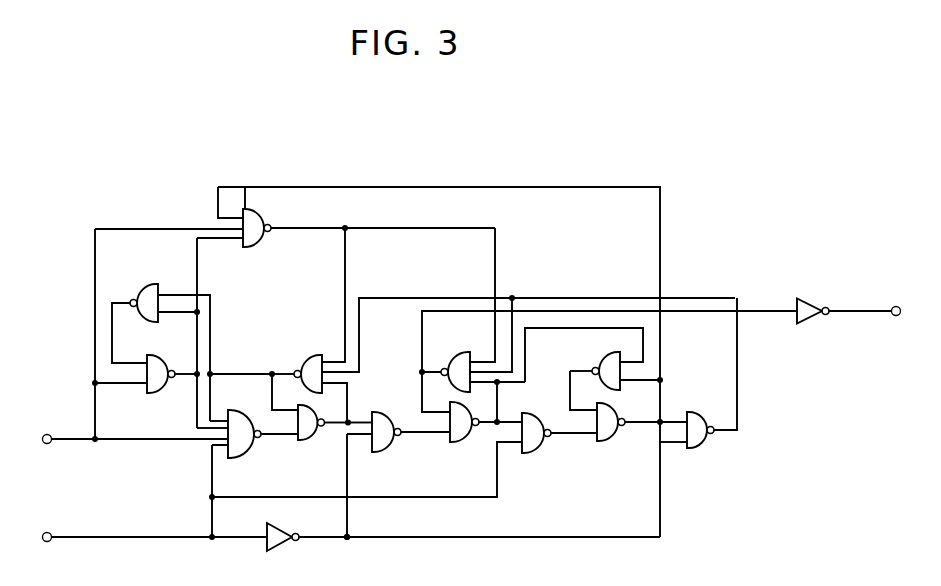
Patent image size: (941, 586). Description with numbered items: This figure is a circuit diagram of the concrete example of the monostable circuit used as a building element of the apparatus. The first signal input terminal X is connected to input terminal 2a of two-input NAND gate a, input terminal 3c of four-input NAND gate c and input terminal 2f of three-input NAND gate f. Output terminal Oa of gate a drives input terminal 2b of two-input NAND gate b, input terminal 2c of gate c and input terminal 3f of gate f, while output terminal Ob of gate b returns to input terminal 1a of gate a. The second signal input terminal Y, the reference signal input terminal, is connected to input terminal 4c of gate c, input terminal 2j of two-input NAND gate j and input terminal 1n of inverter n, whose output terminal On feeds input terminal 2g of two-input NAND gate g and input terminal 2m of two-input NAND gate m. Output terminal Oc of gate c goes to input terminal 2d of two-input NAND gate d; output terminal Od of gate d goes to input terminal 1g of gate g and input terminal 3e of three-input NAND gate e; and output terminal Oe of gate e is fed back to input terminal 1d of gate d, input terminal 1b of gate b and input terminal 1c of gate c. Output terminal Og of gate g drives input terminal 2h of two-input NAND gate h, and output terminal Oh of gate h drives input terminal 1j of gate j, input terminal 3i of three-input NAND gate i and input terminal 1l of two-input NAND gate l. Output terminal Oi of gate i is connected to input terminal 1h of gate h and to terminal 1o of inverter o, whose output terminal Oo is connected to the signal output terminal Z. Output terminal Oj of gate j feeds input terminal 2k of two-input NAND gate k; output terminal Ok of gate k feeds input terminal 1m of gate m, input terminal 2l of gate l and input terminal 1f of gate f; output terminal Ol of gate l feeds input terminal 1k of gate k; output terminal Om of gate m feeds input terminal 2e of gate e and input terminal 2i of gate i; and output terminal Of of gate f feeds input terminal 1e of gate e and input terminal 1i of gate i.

The first signal input terminal X is at (48, 434).
The second signal input terminal Y is at (50, 532).
The signal output terminal Z is at (900, 303).
The 2-input NAND gate a is at (157, 391).
The input terminal 1a is at (114, 358).
The input terminal 2a is at (130, 385).
The output terminal Oa is at (176, 378).
The 2-input NAND gate b is at (151, 284).
The input terminal 1b is at (171, 293).
The input terminal 2b is at (165, 317).
The output terminal Ob is at (128, 298).
The 4-input NAND gate c is at (242, 456).
The input terminal 1c is at (214, 418).
The input terminal 2c is at (221, 435).
The input terminal 3c is at (224, 455).
The input terminal 4c is at (216, 462).
The output terminal Oc is at (260, 437).
The 2-input NAND gate d is at (304, 440).
The input terminal 1d is at (285, 410).
The input terminal 2d is at (290, 436).
The output terminal Od is at (324, 429).
The 3-input NAND gate e is at (309, 357).
The input terminal 1e is at (336, 355).
The input terminal 2e is at (338, 384).
The input terminal 3e is at (349, 396).
The output terminal Oe is at (289, 370).
The 3-input NAND gate f is at (260, 244).
The input terminal 1f is at (244, 210).
The input terminal 2f is at (217, 222).
The input terminal 3f is at (242, 246).
The output terminal Of is at (277, 226).
The 2-input NAND gate g is at (388, 448).
The input terminal 1g is at (366, 418).
The input terminal 2g is at (355, 452).
The output terminal Og is at (407, 436).
The 2-input NAND gate h is at (462, 447).
The input terminal 1h is at (428, 407).
The input terminal 2h is at (441, 437).
The output terminal Oh is at (478, 430).
The 3-input NAND gate i is at (458, 353).
The input terminal 1i is at (483, 356).
The input terminal 2i is at (484, 372).
The input terminal 3i is at (478, 388).
The output terminal Oi is at (439, 366).
The 2-input NAND gate j is at (537, 451).
The input terminal 1j is at (512, 418).
The input terminal 2j is at (503, 451).
The output terminal Oj is at (552, 438).
The 2-input NAND gate k is at (614, 444).
The input terminal 1k is at (578, 413).
The input terminal 2k is at (589, 439).
The output terminal Ok is at (633, 429).
The 2-input NAND gate l is at (614, 350).
The input terminal 1l is at (631, 362).
The input terminal 2l is at (630, 384).
The output terminal Ol is at (592, 367).
The 2-input NAND gate m is at (709, 451).
The input terminal 1m is at (682, 415).
The input terminal 2m is at (678, 450).
The output terminal Om is at (719, 429).
The inverter n is at (279, 550).
The input terminal 1n is at (262, 545).
The output terminal On is at (313, 544).
The inverter o is at (806, 319).
The terminal 1o is at (793, 319).
The output terminal Oo is at (839, 318).